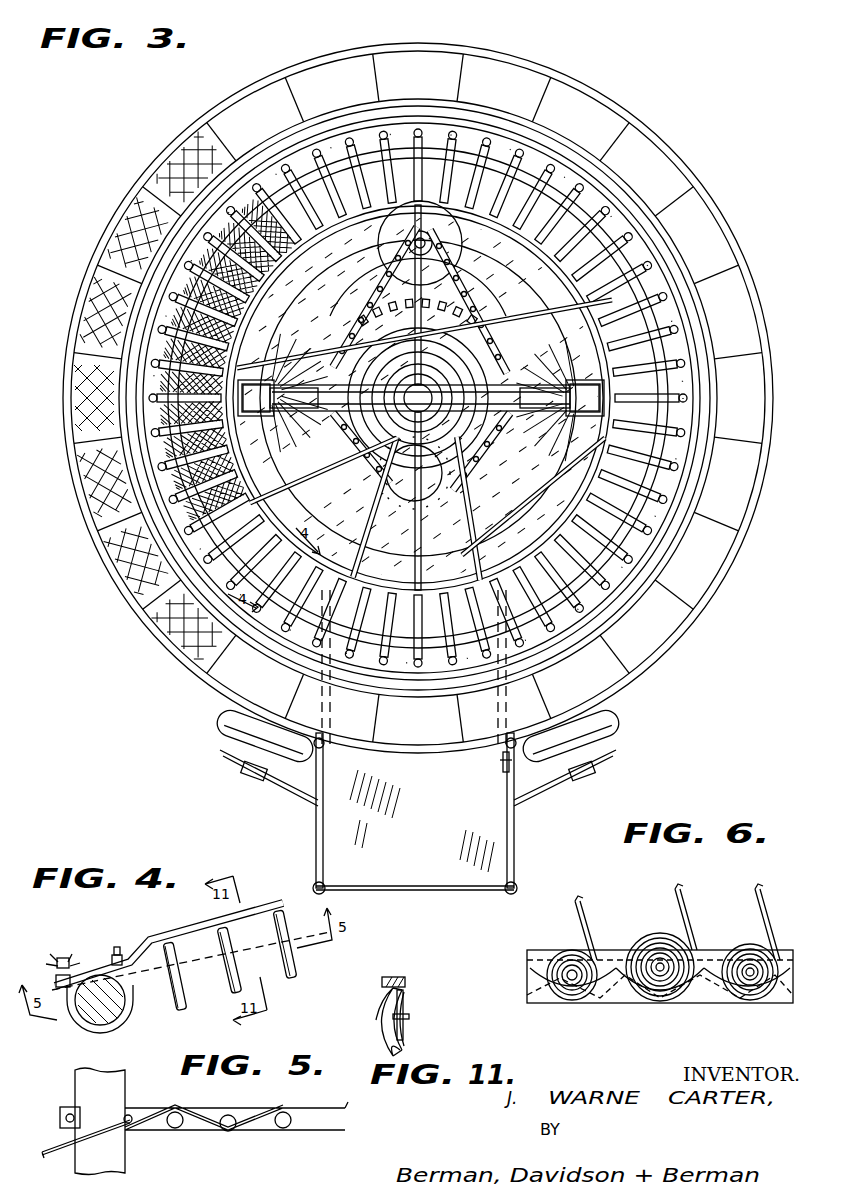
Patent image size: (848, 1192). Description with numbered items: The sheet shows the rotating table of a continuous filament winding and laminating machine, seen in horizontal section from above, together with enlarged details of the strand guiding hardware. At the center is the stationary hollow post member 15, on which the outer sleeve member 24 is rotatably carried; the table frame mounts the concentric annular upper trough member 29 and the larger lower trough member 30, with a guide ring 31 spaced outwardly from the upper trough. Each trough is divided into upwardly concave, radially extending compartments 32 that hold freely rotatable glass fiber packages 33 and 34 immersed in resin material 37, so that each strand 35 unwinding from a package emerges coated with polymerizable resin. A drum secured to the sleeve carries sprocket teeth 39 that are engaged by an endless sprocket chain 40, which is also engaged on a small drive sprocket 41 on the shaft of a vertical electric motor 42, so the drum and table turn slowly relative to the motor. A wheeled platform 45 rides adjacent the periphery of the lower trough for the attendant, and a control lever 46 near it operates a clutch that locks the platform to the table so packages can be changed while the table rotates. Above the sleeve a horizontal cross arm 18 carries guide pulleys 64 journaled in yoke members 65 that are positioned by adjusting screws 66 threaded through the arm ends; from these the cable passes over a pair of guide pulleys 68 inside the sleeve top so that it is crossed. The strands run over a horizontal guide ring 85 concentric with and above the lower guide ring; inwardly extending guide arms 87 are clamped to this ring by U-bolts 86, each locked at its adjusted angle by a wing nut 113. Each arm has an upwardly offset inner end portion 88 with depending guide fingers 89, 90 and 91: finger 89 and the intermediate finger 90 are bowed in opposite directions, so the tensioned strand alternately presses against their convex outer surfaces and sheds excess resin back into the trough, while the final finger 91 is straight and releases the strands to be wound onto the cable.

In FIG. 3, the lower trough member 30 is at (705, 236).
In FIG. 3, the glass fiber package 34 is at (132, 586).
In FIG. 3, the upper trough member 29 is at (684, 344).
In FIG. 6, the upper trough member 29 is at (780, 955).
In FIG. 3, the guide ring 31 is at (620, 616).
In FIG. 3, the upwardly offset inner end portion 88 is at (522, 150).
In FIG. 4, the upwardly offset inner end portion 88 is at (192, 928).
In FIG. 11, the upwardly offset inner end portion 88 is at (396, 976).
In FIG. 3, the wing nut 113 is at (375, 142).
In FIG. 4, the wing nut 113 is at (70, 956).
In FIG. 3, the horizontal guide ring 85 is at (662, 386).
In FIG. 4, the horizontal guide ring 85 is at (100, 970).
In FIG. 5, the horizontal guide ring 85 is at (116, 1160).
In FIG. 3, the endless sprocket chain 40 is at (472, 302).
In FIG. 3, the vertical electric motor 42 is at (460, 250).
In FIG. 3, the sprocket teeth 39 is at (430, 306).
In FIG. 3, the guide pulley 68 is at (428, 340).
In FIG. 3, the outer sleeve member 24 is at (446, 356).
In FIG. 3, the post member 15 is at (454, 368).
In FIG. 3, the drive sprocket 41 is at (424, 397).
In FIG. 3, the cross arm 18 is at (528, 392).
In FIG. 3, the yoke member 65 is at (548, 388).
In FIG. 3, the adjusting screw 66 is at (590, 384).
In FIG. 3, the guide pulley 64 is at (292, 410).
In FIG. 3, the glass fiber package 33 is at (240, 506).
In FIG. 6, the glass fiber package 33 is at (648, 940).
In FIG. 3, the guide arm 87 is at (268, 580).
In FIG. 4, the guide arm 87 is at (52, 978).
In FIG. 5, the guide arm 87 is at (60, 1113).
In FIG. 3, the wheeled platform 45 is at (420, 856).
In FIG. 3, the control lever 46 is at (502, 770).
In FIG. 4, the guide finger 89 is at (180, 1010).
In FIG. 5, the guide finger 89 is at (176, 1130).
In FIG. 11, the guide finger 89 is at (406, 1004).
In FIG. 4, the intermediate guide finger 90 is at (232, 990).
In FIG. 5, the intermediate guide finger 90 is at (228, 1132).
In FIG. 11, the intermediate guide finger 90 is at (382, 1002).
In FIG. 4, the final guide finger 91 is at (294, 975).
In FIG. 5, the final guide finger 91 is at (283, 1130).
In FIG. 4, the glass fiber strand 35 is at (288, 930).
In FIG. 5, the glass fiber strand 35 is at (200, 1112).
In FIG. 11, the glass fiber strand 35 is at (408, 1028).
In FIG. 6, the glass fiber strand 35 is at (760, 910).
In FIG. 4, the U-bolt 86 is at (122, 1022).
In FIG. 5, the U-bolt 86 is at (70, 1112).
In FIG. 6, the compartment 32 is at (550, 972).
In FIG. 6, the resin material 37 is at (605, 972).